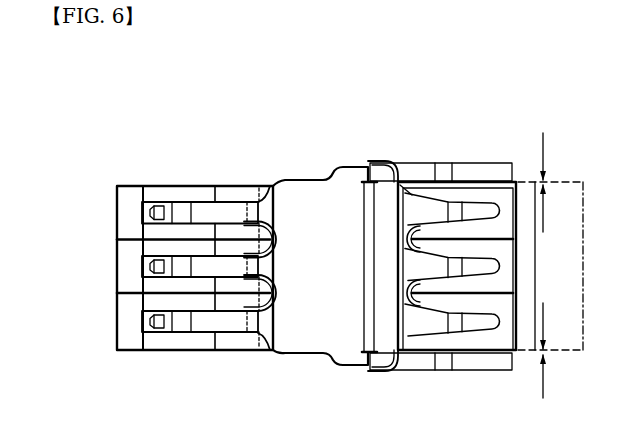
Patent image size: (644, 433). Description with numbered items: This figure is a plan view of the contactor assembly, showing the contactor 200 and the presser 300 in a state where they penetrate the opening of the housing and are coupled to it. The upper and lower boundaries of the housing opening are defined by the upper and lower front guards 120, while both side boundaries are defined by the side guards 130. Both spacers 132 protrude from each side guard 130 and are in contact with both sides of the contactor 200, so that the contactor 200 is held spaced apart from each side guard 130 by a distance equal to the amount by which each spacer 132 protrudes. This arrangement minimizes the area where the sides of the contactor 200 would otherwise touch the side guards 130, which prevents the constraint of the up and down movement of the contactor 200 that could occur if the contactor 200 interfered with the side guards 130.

The front guard 120 is at (388, 222).
The side guard 130 is at (487, 173).
The spacer 132 is at (420, 178).
The contactor 200 is at (193, 188).
The presser 300 is at (207, 323).